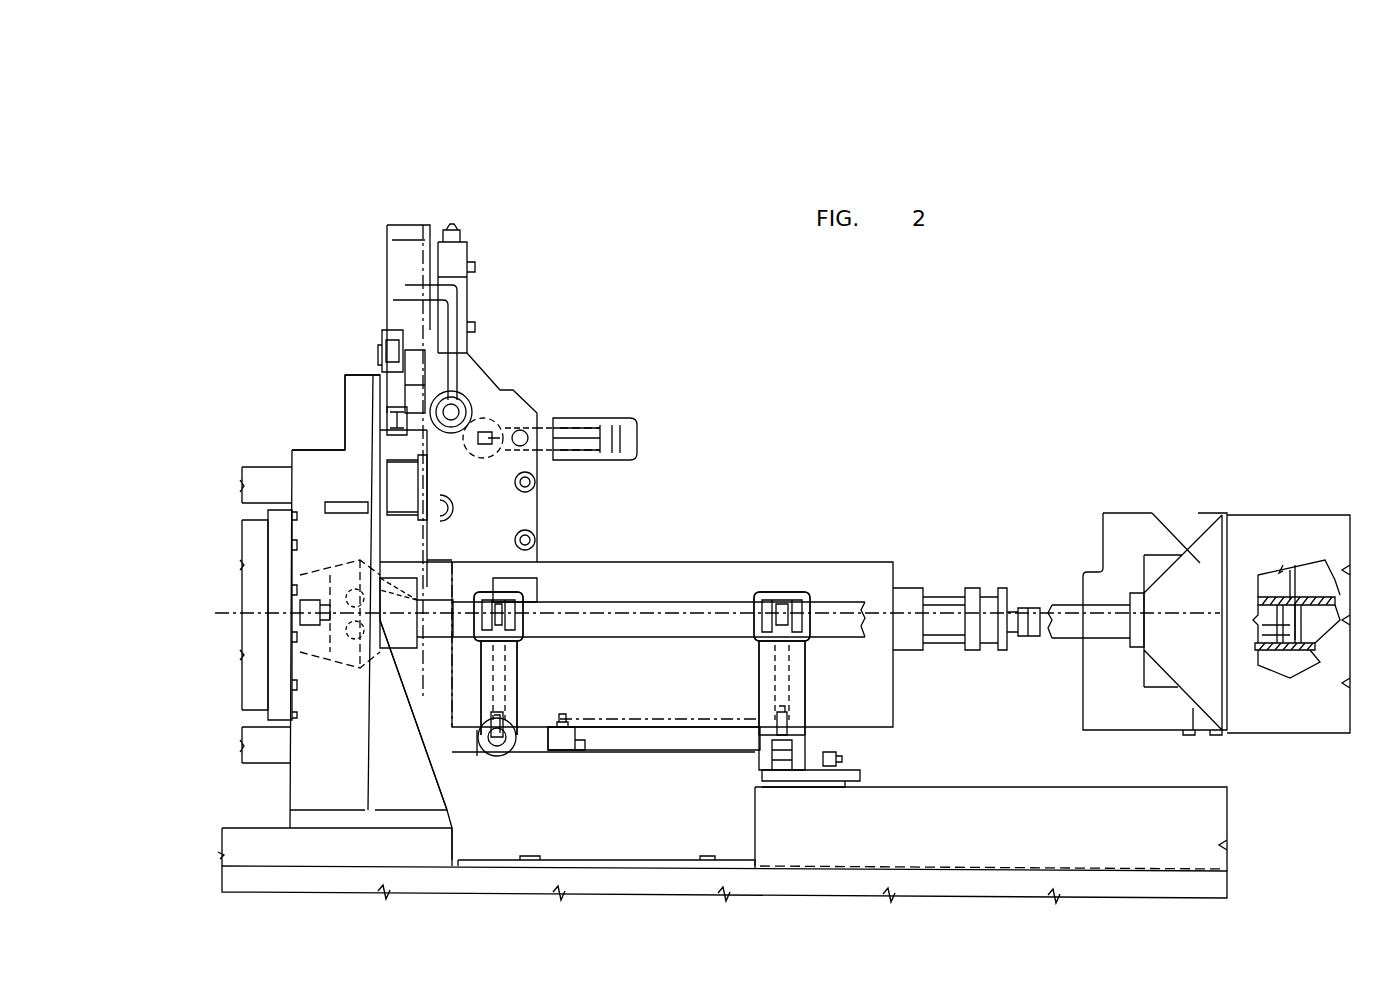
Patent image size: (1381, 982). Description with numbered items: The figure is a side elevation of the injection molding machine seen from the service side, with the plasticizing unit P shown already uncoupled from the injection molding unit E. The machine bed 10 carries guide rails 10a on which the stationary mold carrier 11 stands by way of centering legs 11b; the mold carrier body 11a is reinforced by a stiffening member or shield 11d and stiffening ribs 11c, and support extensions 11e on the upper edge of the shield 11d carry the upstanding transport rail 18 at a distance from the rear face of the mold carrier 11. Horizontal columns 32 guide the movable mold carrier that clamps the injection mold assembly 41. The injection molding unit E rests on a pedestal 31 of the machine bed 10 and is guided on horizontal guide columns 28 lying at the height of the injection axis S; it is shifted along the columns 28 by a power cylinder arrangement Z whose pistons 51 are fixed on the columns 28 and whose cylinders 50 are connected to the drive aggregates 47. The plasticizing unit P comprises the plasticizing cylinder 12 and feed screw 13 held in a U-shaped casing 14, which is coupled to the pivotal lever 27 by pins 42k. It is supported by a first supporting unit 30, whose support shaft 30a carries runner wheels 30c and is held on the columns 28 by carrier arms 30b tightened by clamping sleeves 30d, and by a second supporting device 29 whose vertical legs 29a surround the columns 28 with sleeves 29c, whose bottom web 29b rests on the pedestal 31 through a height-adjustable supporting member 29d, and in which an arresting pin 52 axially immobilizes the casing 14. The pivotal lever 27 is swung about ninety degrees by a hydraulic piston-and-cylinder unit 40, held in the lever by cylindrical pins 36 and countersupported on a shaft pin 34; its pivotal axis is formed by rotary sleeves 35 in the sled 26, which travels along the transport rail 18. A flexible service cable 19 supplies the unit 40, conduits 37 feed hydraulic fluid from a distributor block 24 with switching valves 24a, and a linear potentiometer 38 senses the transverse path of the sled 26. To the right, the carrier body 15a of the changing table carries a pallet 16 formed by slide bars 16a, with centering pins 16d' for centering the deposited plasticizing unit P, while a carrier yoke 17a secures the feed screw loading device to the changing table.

The machine bed 10 is at (590, 882).
The guide rails 10a is at (225, 845).
The stationary mold carrier 11 is at (285, 796).
The mold carrier body 11a is at (330, 525).
The centering legs 11b is at (420, 822).
The stiffening rib 11c is at (355, 427).
The stiffening member 11d is at (370, 400).
The support extensions 11e is at (390, 388).
The plasticizing cylinder 12 is at (330, 595).
The feed screw 13 is at (1020, 605).
The casing 14 is at (715, 583).
The carrier body 15a is at (642, 845).
The pallet 16 is at (675, 730).
The slide bars 16a is at (565, 745).
The centering pins 16d' is at (600, 695).
The carrier yoke 17a is at (978, 717).
The transport rail 18 is at (405, 372).
The flexible service cable 19 is at (386, 237).
The distributor block 24 is at (465, 300).
The switching valves 24a is at (455, 255).
The sled 26 is at (490, 375).
The pivotal lever 27 is at (545, 503).
The guide columns 28 is at (640, 620).
The supporting device 29 is at (808, 706).
The vertical legs 29a is at (800, 670).
The bottom web portion 29b is at (805, 742).
The sleeves 29c is at (780, 595).
The height-adjustable supporting member 29d is at (825, 760).
The first supporting unit 30 is at (518, 657).
The horizontal support shaft 30a is at (512, 752).
The carrier arms 30b is at (512, 692).
The runner wheels 30c is at (479, 762).
The clamping sleeves 30d is at (495, 596).
The pedestal 31 is at (975, 845).
The horizontal columns 32 is at (255, 745).
The shaft pin 34 is at (478, 455).
The rotary sleeves 35 is at (472, 408).
The cylindrical pins 36 is at (517, 450).
The conduits 37 is at (393, 300).
The linear potentiometer 38 is at (378, 350).
The hydraulic piston-and-cylinder unit 40 is at (611, 416).
The injection mold assembly 41 is at (278, 640).
The pins 42k is at (545, 582).
The drive aggregates 47 is at (1200, 563).
The cylinders 50 is at (1316, 530).
The pistons 51 is at (1296, 560).
The arresting pin 52 is at (770, 717).
The injection molding unit E is at (1206, 511).
The plasticizing unit P is at (855, 562).
The injection axis S is at (300, 613).
The power cylinder arrangement Z is at (1272, 592).